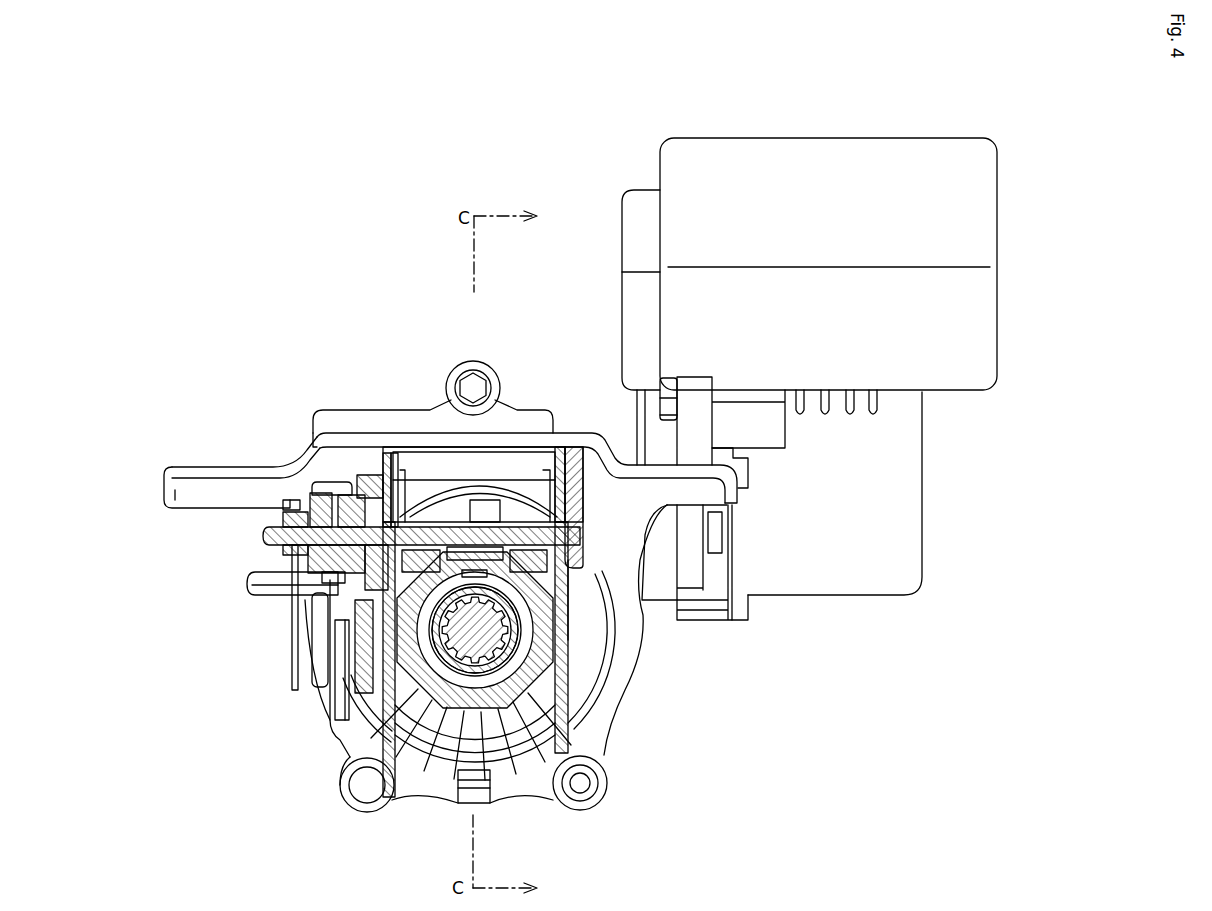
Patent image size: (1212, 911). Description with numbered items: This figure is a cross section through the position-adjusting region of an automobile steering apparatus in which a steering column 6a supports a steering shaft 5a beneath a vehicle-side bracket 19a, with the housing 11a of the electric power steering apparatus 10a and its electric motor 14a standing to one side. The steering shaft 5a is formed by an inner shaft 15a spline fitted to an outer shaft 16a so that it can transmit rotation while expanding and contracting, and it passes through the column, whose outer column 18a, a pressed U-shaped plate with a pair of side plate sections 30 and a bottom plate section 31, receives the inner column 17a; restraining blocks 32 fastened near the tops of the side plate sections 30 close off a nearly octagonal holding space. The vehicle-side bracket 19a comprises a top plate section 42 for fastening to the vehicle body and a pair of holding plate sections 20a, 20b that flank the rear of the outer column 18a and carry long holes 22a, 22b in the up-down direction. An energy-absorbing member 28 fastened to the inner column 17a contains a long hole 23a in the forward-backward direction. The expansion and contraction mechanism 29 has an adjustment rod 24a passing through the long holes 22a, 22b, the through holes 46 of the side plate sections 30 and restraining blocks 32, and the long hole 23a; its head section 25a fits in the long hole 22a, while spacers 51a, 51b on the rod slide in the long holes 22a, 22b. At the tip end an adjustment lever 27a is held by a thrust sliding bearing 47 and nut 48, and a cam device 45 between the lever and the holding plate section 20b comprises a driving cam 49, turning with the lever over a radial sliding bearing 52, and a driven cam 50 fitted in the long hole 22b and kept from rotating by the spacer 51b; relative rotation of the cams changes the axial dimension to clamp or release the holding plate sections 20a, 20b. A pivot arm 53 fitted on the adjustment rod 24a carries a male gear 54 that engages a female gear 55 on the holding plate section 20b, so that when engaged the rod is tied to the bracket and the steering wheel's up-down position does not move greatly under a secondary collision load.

The electric power steering apparatus 10a is at (925, 428).
The electric motor 14a is at (910, 492).
The vehicle-side bracket 19a is at (200, 467).
The spacer 51a is at (562, 433).
The housing 11a is at (430, 408).
The energy-absorbing member 28 is at (472, 361).
The through holes 46 is at (413, 473).
The adjustment rod 24a is at (440, 507).
The long hole in the forward-backward direction 23a is at (490, 500).
The top plate section 42 is at (548, 450).
The head section 25a is at (583, 500).
The expansion and contraction mechanism 29 is at (585, 537).
The driven cam 50 is at (333, 482).
The pivot arm 53 is at (362, 476).
The spacer 51b is at (386, 455).
The driving cam 49 is at (312, 512).
The thrust sliding bearing 47 is at (293, 527).
The nut 48 is at (287, 505).
The radial sliding bearing 52 is at (288, 550).
The cam device 45 is at (255, 582).
The long hole in the up-down direction 22b is at (292, 677).
The adjustment lever 27a is at (312, 648).
The restraining blocks 32 is at (330, 627).
The side plate sections 30 is at (355, 680).
The female gear 55 is at (345, 655).
The male gear 54 is at (338, 742).
The holding plate section 20b is at (352, 760).
The holding plate section 20a is at (607, 748).
The steering shaft 5a is at (617, 630).
The long hole in the up-down direction 22a is at (568, 637).
The steering column 6a is at (372, 808).
The inner column 17a is at (430, 760).
The inner shaft 15a is at (460, 762).
The bottom plate section 31 is at (485, 715).
The outer shaft 16a is at (535, 798).
The outer column 18a is at (583, 808).